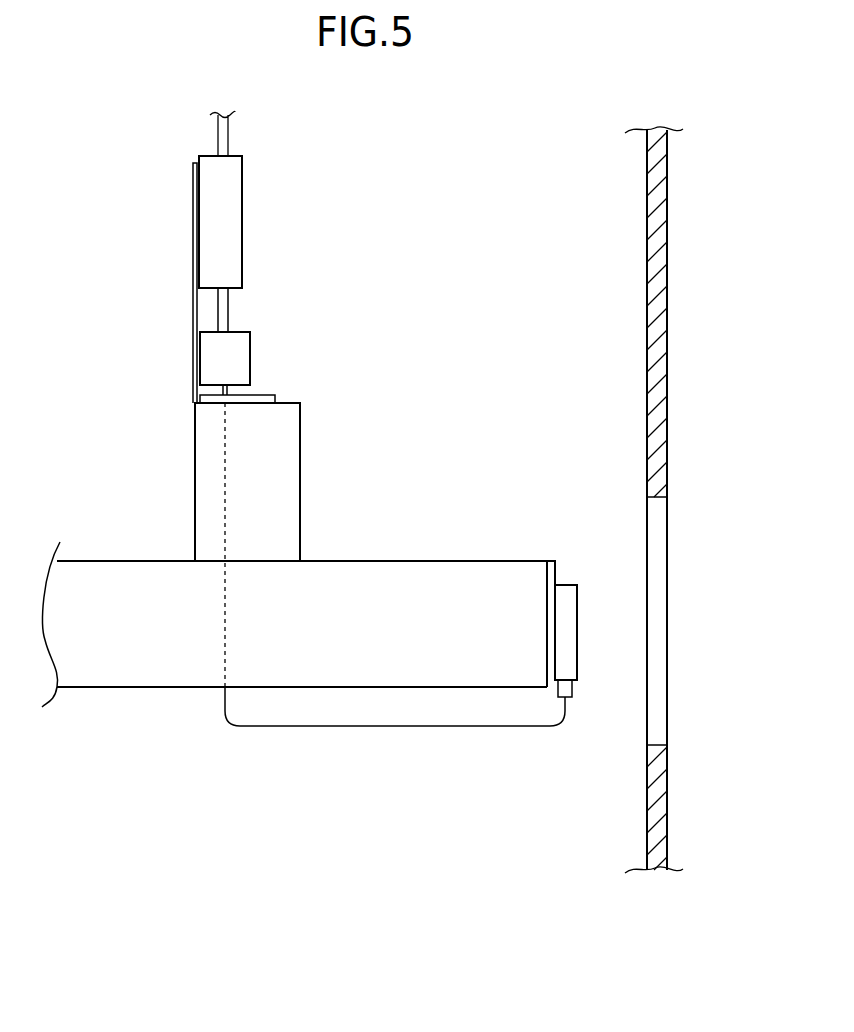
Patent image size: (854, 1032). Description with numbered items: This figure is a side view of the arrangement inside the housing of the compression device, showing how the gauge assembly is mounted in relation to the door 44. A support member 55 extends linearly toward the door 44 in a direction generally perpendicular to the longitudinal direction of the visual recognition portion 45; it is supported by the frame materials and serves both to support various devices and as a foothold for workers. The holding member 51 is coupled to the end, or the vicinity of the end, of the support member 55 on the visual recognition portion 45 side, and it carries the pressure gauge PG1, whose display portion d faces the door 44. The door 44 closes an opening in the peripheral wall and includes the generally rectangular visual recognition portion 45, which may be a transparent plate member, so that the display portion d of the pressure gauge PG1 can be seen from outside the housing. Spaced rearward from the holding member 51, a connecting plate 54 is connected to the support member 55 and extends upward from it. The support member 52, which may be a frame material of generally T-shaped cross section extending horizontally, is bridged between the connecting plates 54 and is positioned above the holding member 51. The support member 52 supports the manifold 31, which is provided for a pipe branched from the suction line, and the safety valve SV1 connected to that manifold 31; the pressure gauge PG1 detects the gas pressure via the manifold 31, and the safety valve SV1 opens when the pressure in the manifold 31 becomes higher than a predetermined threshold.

The safety valve SV1 is at (242, 170).
The support member 52 is at (195, 307).
The manifold 31 is at (250, 341).
The connecting plate 54 is at (207, 479).
The support member 55 is at (135, 560).
The holding member 51 is at (550, 561).
The pressure gauge PG1 is at (567, 585).
The display portion d is at (578, 633).
The door 44 is at (663, 312).
The visual recognition portion 45 is at (660, 627).